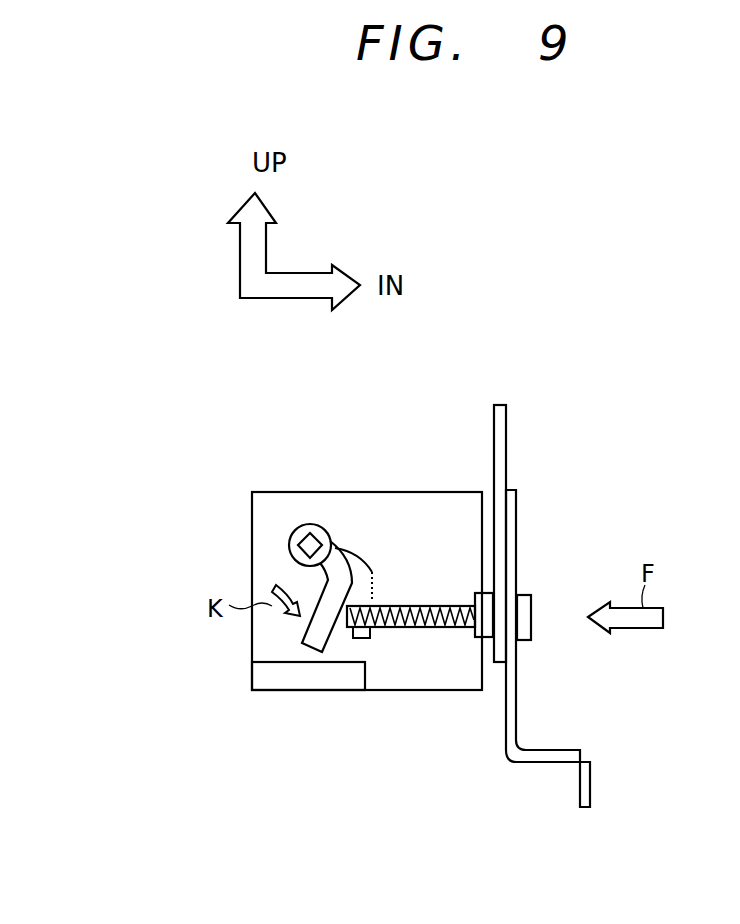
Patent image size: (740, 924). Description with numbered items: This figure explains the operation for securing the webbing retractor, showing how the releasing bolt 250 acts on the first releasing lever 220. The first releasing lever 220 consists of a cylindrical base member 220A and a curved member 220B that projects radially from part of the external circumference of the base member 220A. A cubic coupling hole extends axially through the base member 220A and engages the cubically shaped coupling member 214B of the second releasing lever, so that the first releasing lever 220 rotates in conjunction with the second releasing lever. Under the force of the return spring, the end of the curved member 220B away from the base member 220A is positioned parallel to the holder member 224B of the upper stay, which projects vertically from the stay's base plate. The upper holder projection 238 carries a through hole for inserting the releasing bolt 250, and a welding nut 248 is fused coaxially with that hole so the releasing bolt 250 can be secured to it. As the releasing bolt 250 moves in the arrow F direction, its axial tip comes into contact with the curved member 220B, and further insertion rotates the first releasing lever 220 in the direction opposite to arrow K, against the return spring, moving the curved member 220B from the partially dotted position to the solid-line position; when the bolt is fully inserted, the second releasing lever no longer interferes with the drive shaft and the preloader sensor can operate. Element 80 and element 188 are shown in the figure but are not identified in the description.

The housing 80 is at (267, 491).
The plate 188 is at (273, 682).
The coupling member 214B is at (310, 524).
The first releasing lever 220 is at (257, 566).
The base member 220A is at (290, 549).
The curved member 220B is at (302, 637).
The welding nut 248 is at (474, 636).
The upper holder projection 238 is at (508, 428).
The holder member 224B is at (516, 703).
The releasing bolt 250 is at (532, 598).